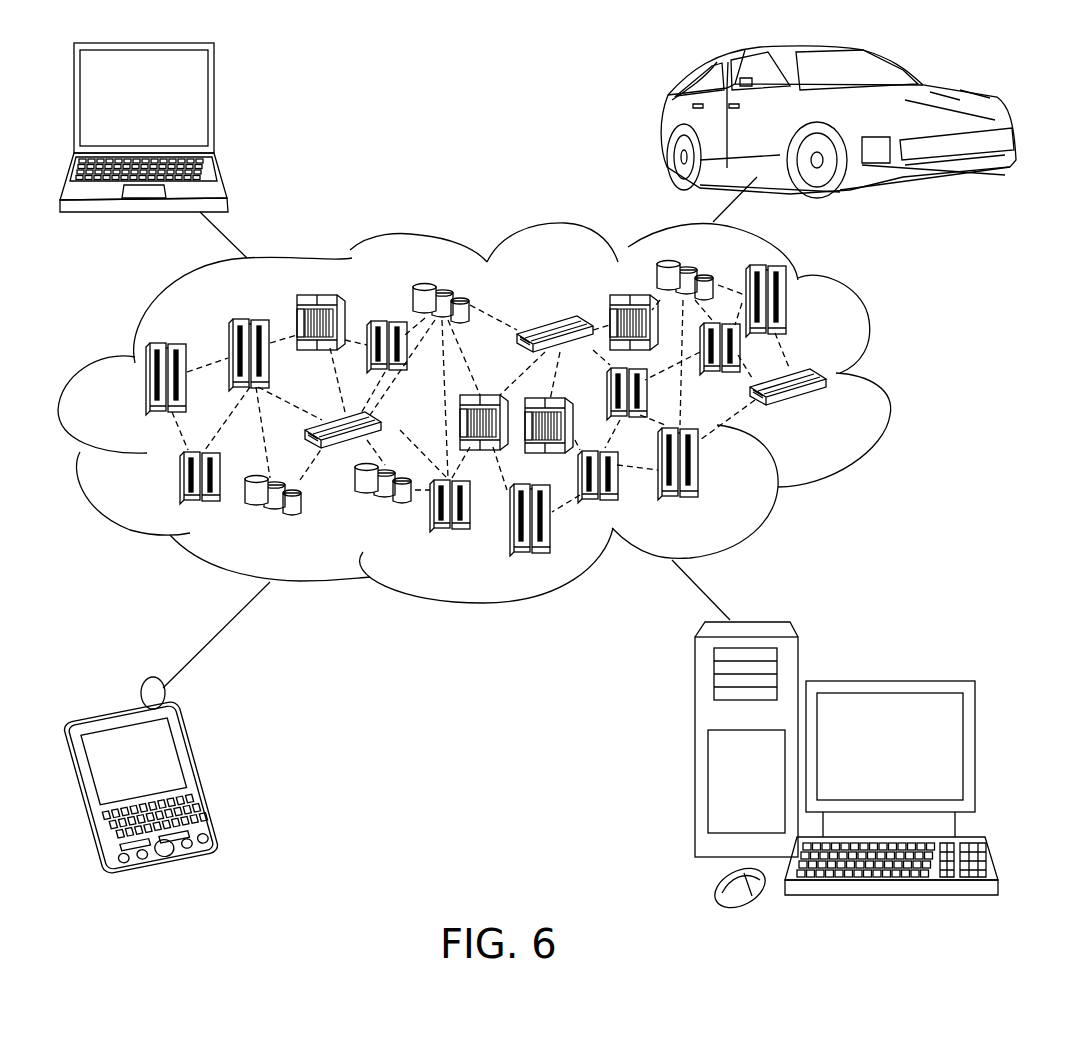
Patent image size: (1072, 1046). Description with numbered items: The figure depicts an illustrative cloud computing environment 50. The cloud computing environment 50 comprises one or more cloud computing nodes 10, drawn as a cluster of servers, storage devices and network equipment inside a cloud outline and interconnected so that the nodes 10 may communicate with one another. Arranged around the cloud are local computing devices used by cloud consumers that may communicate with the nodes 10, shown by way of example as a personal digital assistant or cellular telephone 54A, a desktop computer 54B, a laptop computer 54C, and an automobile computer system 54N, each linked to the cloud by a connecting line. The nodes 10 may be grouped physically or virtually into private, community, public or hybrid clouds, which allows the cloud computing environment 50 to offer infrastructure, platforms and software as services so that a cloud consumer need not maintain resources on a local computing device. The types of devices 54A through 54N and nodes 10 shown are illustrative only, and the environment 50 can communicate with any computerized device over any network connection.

The cloud computing nodes 10 is at (830, 418).
The cloud computing environment 50 is at (897, 381).
The personal digital assistant or cellular telephone 54A is at (205, 775).
The desktop computer 54B is at (897, 681).
The laptop computer 54C is at (214, 107).
The automobile computer system 54N is at (662, 122).